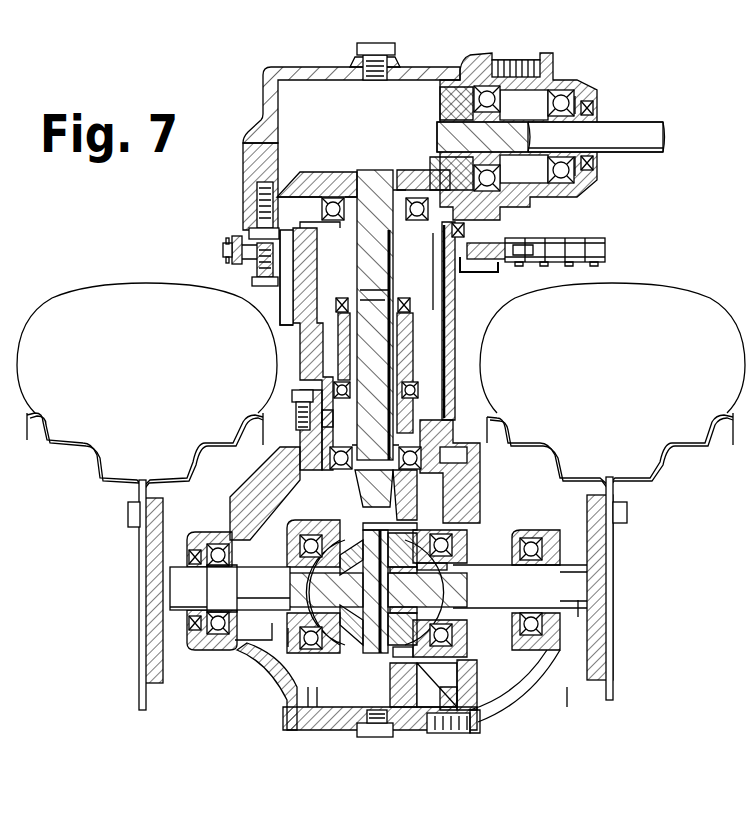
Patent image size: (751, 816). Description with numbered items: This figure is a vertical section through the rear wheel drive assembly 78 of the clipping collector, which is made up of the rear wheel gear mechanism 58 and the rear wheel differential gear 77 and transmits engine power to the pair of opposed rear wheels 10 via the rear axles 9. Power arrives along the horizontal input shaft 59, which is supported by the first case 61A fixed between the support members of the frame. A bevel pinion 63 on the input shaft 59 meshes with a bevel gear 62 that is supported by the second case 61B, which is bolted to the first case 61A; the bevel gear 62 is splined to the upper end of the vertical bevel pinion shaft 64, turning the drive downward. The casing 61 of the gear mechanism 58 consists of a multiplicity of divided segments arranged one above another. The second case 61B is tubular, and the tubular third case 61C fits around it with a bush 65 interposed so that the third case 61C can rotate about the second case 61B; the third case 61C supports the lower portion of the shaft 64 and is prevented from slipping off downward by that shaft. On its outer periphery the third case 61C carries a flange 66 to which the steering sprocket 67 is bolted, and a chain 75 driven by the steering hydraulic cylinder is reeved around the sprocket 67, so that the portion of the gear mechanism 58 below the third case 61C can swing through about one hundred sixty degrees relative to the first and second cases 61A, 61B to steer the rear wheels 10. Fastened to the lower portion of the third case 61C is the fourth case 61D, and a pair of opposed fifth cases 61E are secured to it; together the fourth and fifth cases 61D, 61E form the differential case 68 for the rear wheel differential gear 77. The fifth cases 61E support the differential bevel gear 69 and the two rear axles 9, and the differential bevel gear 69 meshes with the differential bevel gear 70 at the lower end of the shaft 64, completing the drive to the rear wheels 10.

The rear axles 9 is at (150, 595).
The rear wheels 10 is at (163, 284).
The rear wheel gear mechanism 58 is at (597, 80).
The input shaft 59 is at (618, 122).
The casing 61 is at (255, 115).
The first case 61A is at (245, 158).
The second case 61B is at (260, 200).
The third case 61C is at (297, 300).
The fourth case 61D is at (300, 447).
The fifth cases 61E is at (232, 495).
The bevel gear 62 is at (340, 185).
The bevel pinion 63 is at (448, 106).
The vertical bevel pinion shaft 64 is at (385, 273).
The bush 65 is at (315, 292).
The flange 66 is at (478, 272).
The steering sprocket 67 is at (486, 275).
The differential case 68 is at (324, 465).
The differential bevel gear 69 is at (407, 683).
The differential bevel gear 70 is at (357, 483).
The chain 75 is at (585, 241).
The rear wheel differential gear 77 is at (250, 657).
The rear wheel drive assembly 78 is at (208, 248).